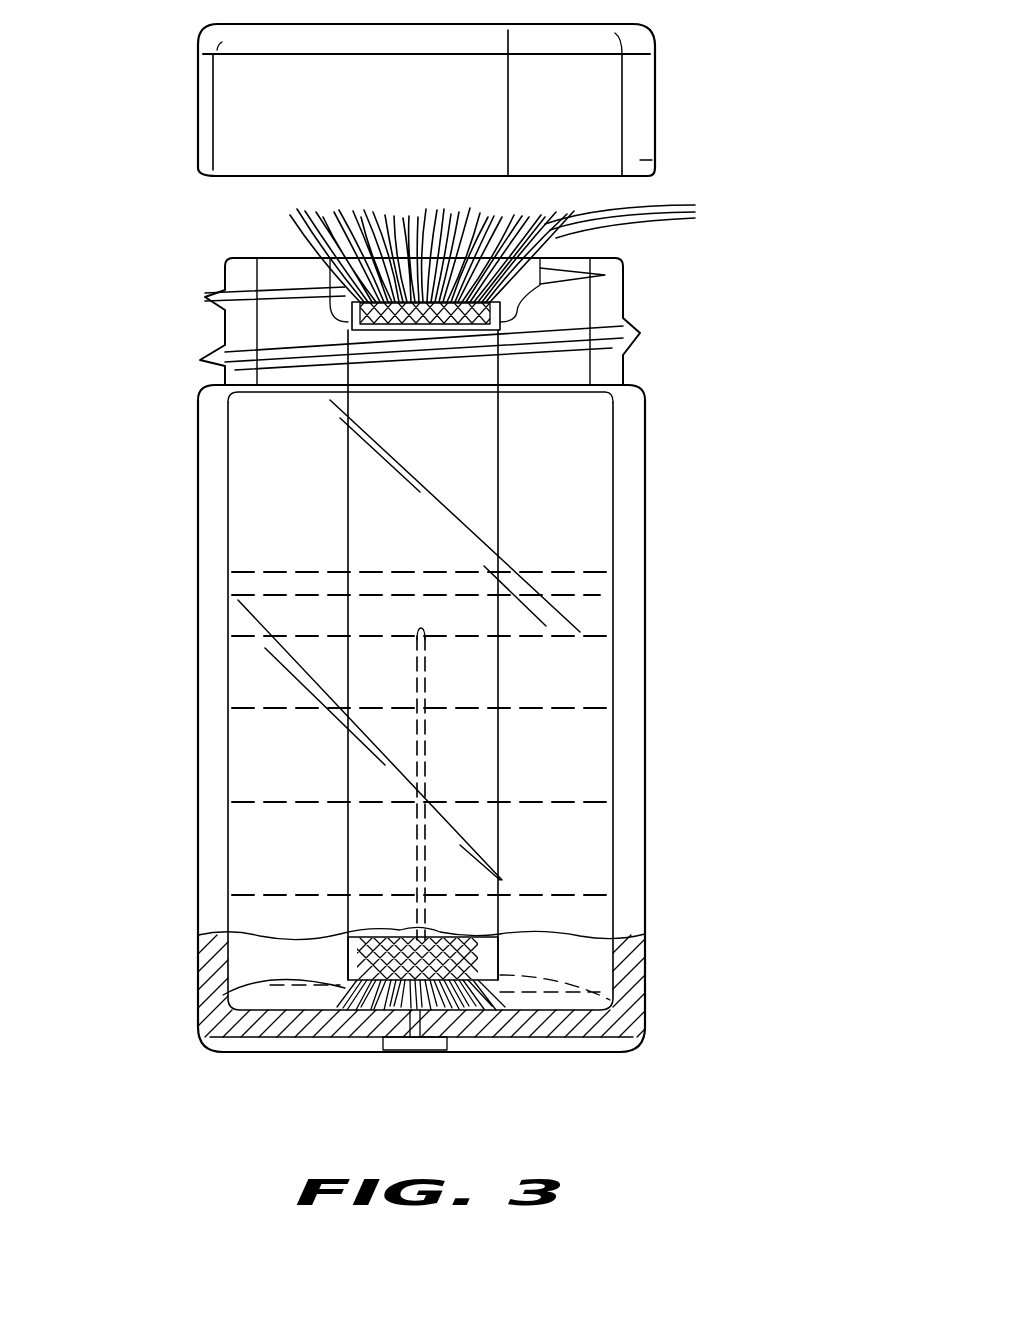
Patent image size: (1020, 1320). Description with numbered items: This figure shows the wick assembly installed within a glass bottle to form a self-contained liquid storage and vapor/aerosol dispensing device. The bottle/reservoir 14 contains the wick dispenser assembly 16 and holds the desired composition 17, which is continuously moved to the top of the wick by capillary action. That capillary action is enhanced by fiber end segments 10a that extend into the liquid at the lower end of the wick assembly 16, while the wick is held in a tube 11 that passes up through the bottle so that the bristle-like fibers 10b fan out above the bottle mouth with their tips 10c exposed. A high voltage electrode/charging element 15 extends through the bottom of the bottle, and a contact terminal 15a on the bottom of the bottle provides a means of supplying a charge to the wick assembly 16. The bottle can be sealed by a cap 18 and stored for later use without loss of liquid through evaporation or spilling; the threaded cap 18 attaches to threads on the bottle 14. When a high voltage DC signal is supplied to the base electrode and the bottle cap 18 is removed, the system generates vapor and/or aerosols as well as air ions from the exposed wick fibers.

The cap 18 is at (658, 92).
The upper brush bristles 10b is at (345, 232).
The bristle tips 10c is at (644, 219).
The brush holder tube 11 is at (498, 470).
The fiber end segments 10a is at (345, 1004).
The bottle/reservoir 14 is at (198, 680).
The desired composition 17 is at (565, 575).
The wick assembly 16 is at (335, 462).
The high voltage electrode/charging element 15 is at (625, 1048).
The contact terminal 15a is at (395, 1055).